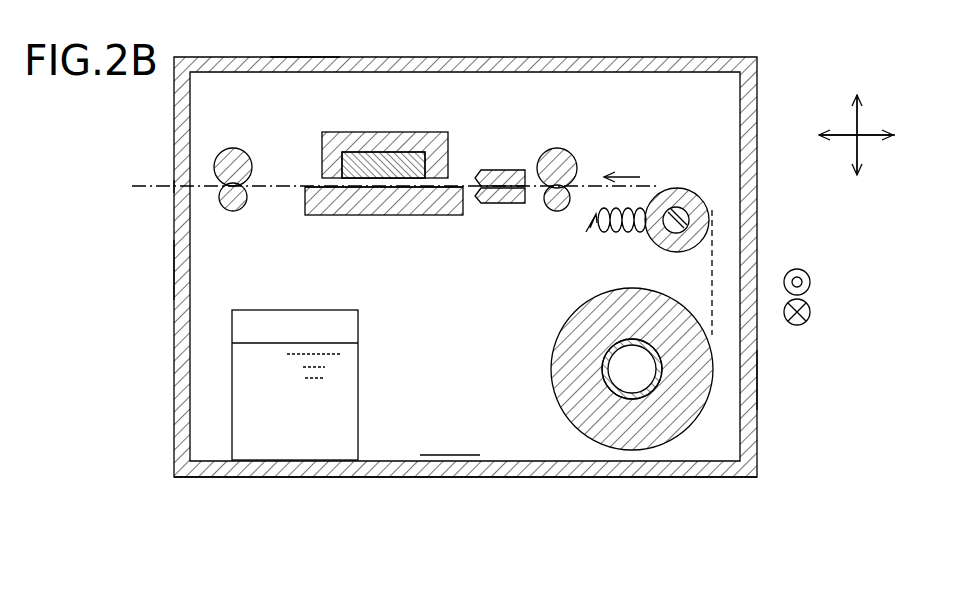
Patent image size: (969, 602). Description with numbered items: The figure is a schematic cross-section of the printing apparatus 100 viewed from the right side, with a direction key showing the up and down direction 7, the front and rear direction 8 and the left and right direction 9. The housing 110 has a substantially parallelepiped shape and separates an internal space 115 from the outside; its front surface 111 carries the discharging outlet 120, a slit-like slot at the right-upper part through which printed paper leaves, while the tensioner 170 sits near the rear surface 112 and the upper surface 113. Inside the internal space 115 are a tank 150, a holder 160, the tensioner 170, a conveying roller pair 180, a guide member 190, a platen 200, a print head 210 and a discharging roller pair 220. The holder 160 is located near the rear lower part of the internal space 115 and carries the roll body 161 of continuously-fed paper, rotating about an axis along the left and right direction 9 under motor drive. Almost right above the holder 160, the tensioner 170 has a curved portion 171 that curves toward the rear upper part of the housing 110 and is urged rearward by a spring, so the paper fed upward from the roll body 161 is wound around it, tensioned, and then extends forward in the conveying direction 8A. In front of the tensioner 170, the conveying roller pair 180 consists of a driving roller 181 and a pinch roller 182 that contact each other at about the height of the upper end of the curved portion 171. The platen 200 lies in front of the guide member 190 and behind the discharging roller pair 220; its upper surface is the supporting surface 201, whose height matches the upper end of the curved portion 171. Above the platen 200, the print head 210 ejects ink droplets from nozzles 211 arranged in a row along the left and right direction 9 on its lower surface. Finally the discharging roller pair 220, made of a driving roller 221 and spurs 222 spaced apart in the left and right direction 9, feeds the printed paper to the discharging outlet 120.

The printing apparatus 100 is at (153, 509).
The housing 110 is at (776, 73).
The front surface 111 is at (173, 265).
The rear surface 112 is at (757, 378).
The upper surface 113 is at (302, 57).
The internal space 115 is at (470, 394).
The discharging outlet 120 is at (171, 192).
The tank 150 is at (232, 421).
The holder 160 is at (612, 408).
The roll body 161 is at (618, 400).
The tensioner 170 is at (654, 214).
The curved portion 171 is at (704, 188).
The conveying roller pair 180 is at (581, 184).
The driving roller 181 is at (557, 148).
The pinch roller 182 is at (558, 212).
The guide member 190 is at (500, 160).
The platen 200 is at (371, 202).
The supporting surface 201 is at (315, 185).
The print head 210 is at (387, 131).
The nozzles 211 is at (371, 135).
The discharging roller pair 220 is at (253, 182).
The driving roller 221 is at (232, 148).
The spurs 222 is at (236, 212).
The up and down direction 7 is at (862, 123).
The front and rear direction 8 is at (872, 143).
The conveying direction 8A is at (630, 177).
The left and right direction 9 is at (843, 262).